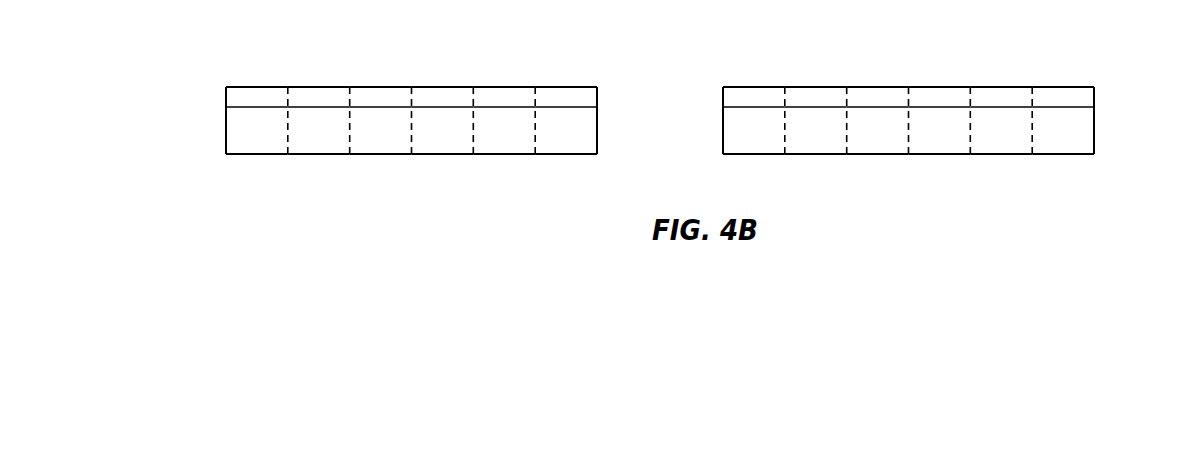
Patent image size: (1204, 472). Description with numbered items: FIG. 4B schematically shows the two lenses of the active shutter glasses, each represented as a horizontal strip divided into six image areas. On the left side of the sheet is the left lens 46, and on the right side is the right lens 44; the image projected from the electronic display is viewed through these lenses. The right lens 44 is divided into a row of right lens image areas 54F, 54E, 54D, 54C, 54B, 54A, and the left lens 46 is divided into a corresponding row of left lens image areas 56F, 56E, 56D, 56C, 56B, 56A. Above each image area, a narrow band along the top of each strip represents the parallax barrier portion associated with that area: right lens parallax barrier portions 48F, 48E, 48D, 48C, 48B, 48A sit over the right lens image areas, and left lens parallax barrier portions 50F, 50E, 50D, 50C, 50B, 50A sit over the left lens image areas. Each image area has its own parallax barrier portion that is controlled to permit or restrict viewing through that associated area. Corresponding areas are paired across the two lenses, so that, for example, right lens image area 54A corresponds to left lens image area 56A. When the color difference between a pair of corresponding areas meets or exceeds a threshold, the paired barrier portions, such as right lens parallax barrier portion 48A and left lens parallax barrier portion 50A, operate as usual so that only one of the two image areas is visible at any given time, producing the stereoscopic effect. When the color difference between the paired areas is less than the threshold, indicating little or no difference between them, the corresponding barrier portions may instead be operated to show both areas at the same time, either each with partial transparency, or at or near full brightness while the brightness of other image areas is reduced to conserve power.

The right lens 44 is at (1126, 132).
The left lens 46 is at (207, 131).
The right lens parallax barrier portion 48A is at (1063, 92).
The right lens parallax barrier portion 48B is at (999, 92).
The right lens parallax barrier portion 48C is at (938, 92).
The right lens parallax barrier portion 48D is at (880, 92).
The right lens parallax barrier portion 48E is at (813, 92).
The right lens parallax barrier portion 48F is at (752, 92).
The left lens parallax barrier portion 50A is at (568, 92).
The left lens parallax barrier portion 50B is at (502, 92).
The left lens parallax barrier portion 50C is at (440, 92).
The left lens parallax barrier portion 50D is at (381, 92).
The left lens parallax barrier portion 50E is at (315, 92).
The left lens parallax barrier portion 50F is at (255, 92).
The right lens image area 54A is at (1044, 139).
The right lens image area 54B is at (1020, 139).
The right lens image area 54C is at (958, 139).
The right lens image area 54D is at (859, 139).
The right lens image area 54E is at (797, 139).
The right lens image area 54F is at (735, 139).
The left lens image area 56A is at (547, 139).
The left lens image area 56B is at (523, 139).
The left lens image area 56C is at (461, 139).
The left lens image area 56D is at (362, 139).
The left lens image area 56E is at (300, 139).
The left lens image area 56F is at (238, 139).